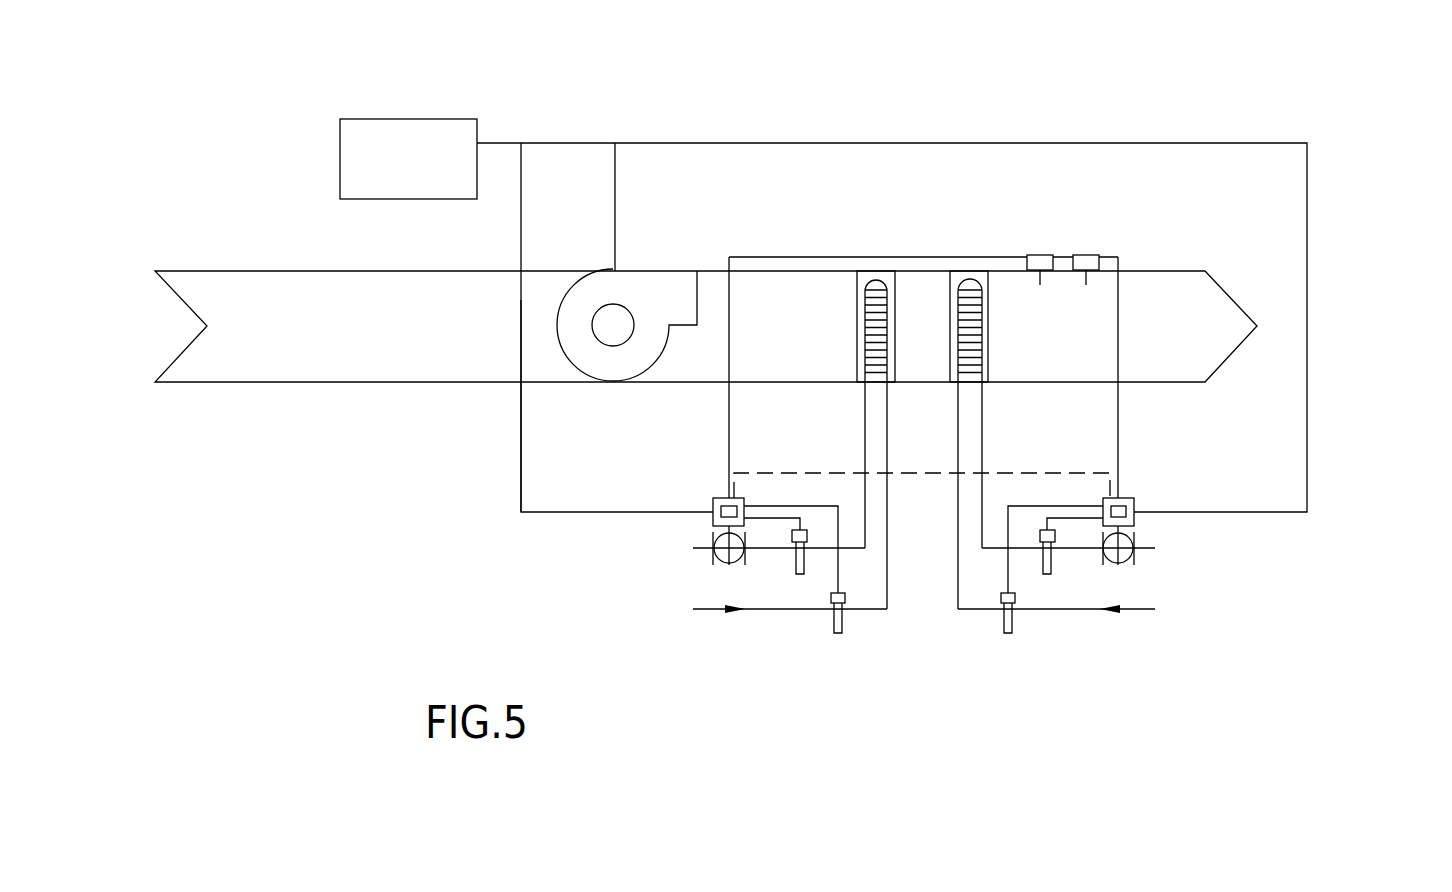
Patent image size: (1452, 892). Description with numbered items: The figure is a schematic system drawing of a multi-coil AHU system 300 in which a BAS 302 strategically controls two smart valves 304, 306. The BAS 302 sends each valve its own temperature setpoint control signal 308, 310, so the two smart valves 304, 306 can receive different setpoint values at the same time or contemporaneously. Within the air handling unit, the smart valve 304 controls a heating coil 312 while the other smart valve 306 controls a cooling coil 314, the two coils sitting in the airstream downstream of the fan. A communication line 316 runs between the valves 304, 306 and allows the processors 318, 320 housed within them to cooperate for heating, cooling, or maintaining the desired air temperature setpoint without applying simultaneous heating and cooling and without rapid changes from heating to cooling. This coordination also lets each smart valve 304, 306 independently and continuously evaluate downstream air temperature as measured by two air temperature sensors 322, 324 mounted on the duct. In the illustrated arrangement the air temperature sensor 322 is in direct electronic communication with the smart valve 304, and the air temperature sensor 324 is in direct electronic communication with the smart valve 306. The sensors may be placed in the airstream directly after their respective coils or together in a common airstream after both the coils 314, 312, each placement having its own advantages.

The multi-coil AHU system 300 is at (1212, 63).
The BAS 302 is at (338, 159).
The smart valve 304 is at (1186, 532).
The smart valve 306 is at (687, 530).
The temperature setpoint control signal 308 is at (1308, 248).
The temperature setpoint control signal 310 is at (519, 472).
The heating coil 312 is at (988, 338).
The cooling coil 314 is at (857, 338).
The communication line 316 is at (912, 475).
The processor 318 is at (1134, 518).
The processor 320 is at (712, 506).
The air temperature sensor 322 is at (1086, 254).
The air temperature sensor 324 is at (1040, 254).